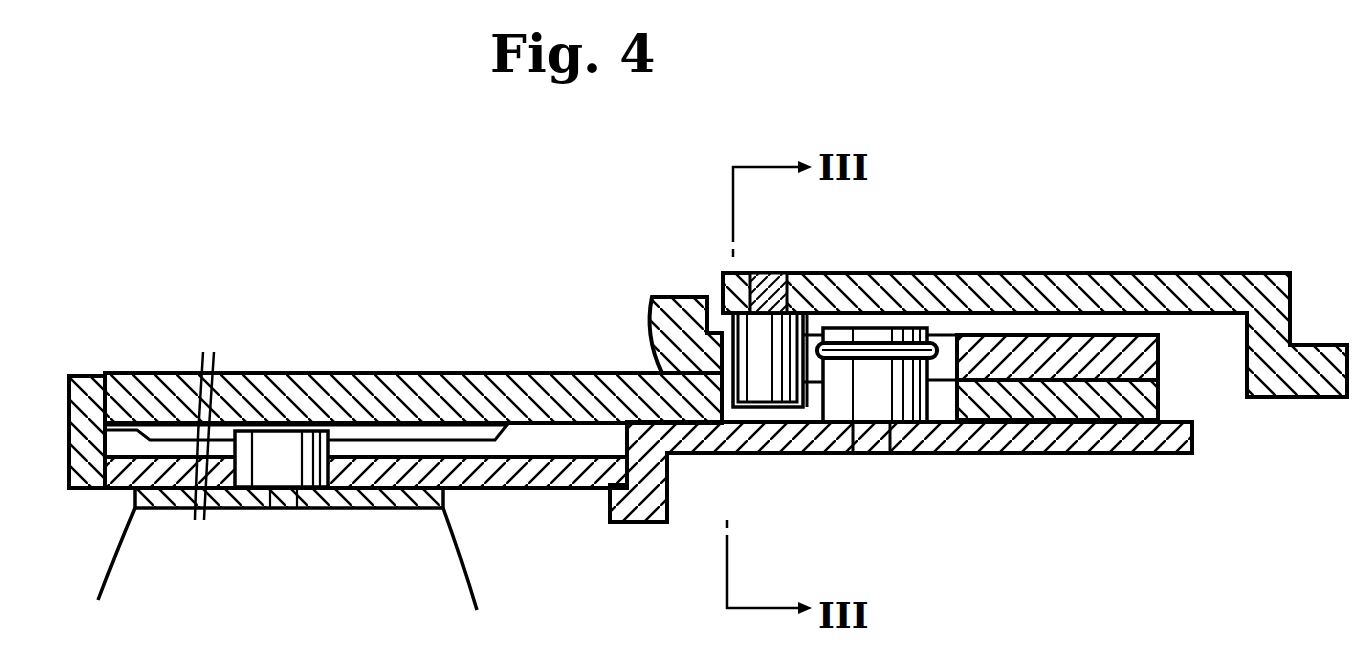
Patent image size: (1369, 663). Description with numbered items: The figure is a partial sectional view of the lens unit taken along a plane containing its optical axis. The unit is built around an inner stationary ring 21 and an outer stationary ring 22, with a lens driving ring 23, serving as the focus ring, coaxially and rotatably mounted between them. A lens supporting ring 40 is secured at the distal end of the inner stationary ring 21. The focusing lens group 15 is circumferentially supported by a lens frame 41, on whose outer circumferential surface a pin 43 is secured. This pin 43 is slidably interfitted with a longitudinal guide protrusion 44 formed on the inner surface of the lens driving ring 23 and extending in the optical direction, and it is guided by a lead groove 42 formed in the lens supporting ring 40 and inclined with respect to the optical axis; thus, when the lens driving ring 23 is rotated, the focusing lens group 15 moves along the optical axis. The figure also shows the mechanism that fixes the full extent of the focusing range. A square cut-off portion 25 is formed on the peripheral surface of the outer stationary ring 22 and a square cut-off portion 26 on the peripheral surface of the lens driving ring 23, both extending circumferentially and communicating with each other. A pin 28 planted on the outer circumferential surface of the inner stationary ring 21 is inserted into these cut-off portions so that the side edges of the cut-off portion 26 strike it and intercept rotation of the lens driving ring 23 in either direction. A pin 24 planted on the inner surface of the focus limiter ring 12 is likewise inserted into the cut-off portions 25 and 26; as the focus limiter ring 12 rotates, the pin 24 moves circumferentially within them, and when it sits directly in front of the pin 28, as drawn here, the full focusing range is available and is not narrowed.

The focus limiter ring 12 is at (1240, 303).
The focusing lens group 15 is at (447, 577).
The inner stationary ring 21 is at (1140, 430).
The outer stationary ring 22 is at (678, 297).
The lens driving ring 23 is at (553, 387).
The pin 24 is at (820, 273).
The square cut-off portion 25 is at (943, 363).
The square cut-off portion 26 is at (740, 413).
The pin 28 is at (847, 402).
The lens supporting ring 40 is at (557, 475).
The lens frame 41 is at (420, 500).
The lead groove 42 is at (397, 467).
The pin 43 is at (283, 453).
The longitudinal guide protrusion 44 is at (165, 432).